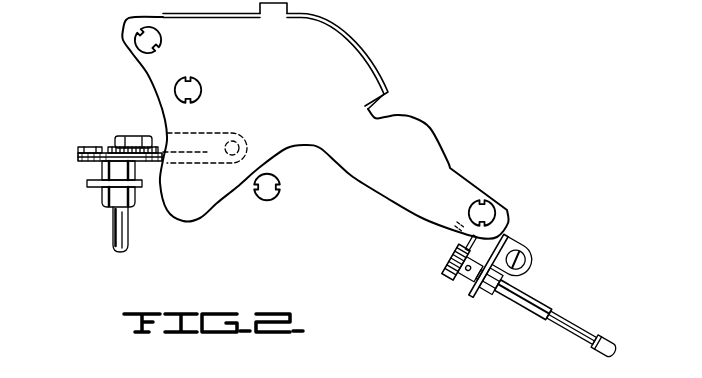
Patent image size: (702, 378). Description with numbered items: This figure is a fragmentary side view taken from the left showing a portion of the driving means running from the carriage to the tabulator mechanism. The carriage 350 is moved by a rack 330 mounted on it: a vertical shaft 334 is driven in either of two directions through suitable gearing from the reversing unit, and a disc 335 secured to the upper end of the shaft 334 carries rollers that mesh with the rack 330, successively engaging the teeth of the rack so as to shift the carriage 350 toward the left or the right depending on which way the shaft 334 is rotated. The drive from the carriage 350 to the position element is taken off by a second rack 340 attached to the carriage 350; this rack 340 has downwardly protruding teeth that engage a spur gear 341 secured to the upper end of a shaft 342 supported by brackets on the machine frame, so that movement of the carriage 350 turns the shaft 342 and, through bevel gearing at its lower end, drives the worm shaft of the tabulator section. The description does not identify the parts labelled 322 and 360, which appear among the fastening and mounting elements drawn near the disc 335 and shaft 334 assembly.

The carriage 350 is at (474, 107).
The rack 330 is at (188, 163).
The fastener assembly 322 is at (112, 147).
The nut 360 is at (133, 136).
The disc 335 is at (78, 158).
The vertical shaft 334 is at (118, 230).
The rack 340 is at (470, 238).
The spur gear 341 is at (450, 283).
The shaft 342 is at (553, 326).